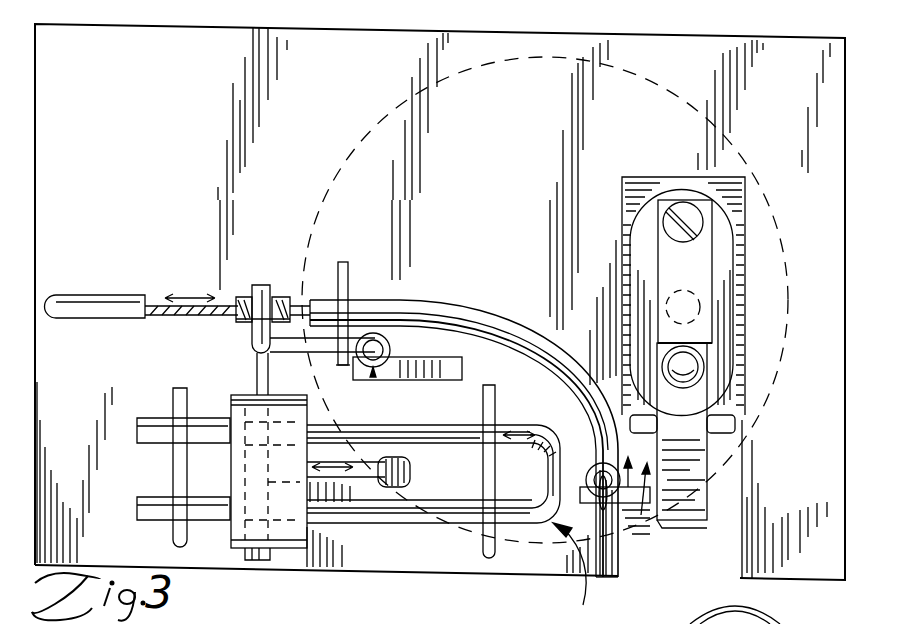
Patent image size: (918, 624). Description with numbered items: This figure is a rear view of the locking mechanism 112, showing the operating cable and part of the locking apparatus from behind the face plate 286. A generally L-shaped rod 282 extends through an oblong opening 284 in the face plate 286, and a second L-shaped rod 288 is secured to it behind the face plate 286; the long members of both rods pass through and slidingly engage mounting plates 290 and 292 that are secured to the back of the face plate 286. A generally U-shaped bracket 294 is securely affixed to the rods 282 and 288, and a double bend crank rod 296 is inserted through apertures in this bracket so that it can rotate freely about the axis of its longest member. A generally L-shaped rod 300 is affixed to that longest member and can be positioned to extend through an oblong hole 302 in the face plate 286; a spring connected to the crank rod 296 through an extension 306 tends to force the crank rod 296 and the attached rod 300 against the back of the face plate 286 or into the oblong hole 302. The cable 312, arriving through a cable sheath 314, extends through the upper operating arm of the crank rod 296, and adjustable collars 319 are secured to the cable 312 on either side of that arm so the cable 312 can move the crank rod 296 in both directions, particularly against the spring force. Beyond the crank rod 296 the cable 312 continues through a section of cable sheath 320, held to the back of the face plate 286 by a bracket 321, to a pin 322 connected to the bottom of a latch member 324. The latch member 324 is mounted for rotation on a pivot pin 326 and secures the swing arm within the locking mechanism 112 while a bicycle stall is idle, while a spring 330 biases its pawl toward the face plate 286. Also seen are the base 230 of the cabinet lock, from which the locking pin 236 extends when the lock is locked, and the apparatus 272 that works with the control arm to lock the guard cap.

The locking mechanism 112 is at (262, 18).
The face plate 286 is at (110, 104).
The cable sheath 314 is at (90, 305).
The cable 312 is at (150, 303).
The adjustable collars 319 is at (278, 297).
The bracket 321 is at (348, 262).
The cable sheath section 320 is at (480, 302).
The base 230 is at (725, 227).
The locking pin 236 is at (695, 305).
The spring 330 is at (700, 363).
The double bend crank rod 296 is at (255, 340).
The extension 306 is at (265, 347).
The L-shaped rod 300 is at (358, 455).
The mounting plate 290 is at (177, 390).
The U-shaped bracket 294 is at (305, 548).
The L-shaped rod 282 is at (435, 425).
The oblong opening 284 is at (560, 425).
The second L-shaped rod 288 is at (370, 517).
The oblong hole 302 is at (405, 468).
The mounting plate 292 is at (483, 550).
The pivot pin 326 is at (735, 425).
The latch member 324 is at (710, 476).
The pin 322 is at (642, 528).
The apparatus 272 is at (599, 573).